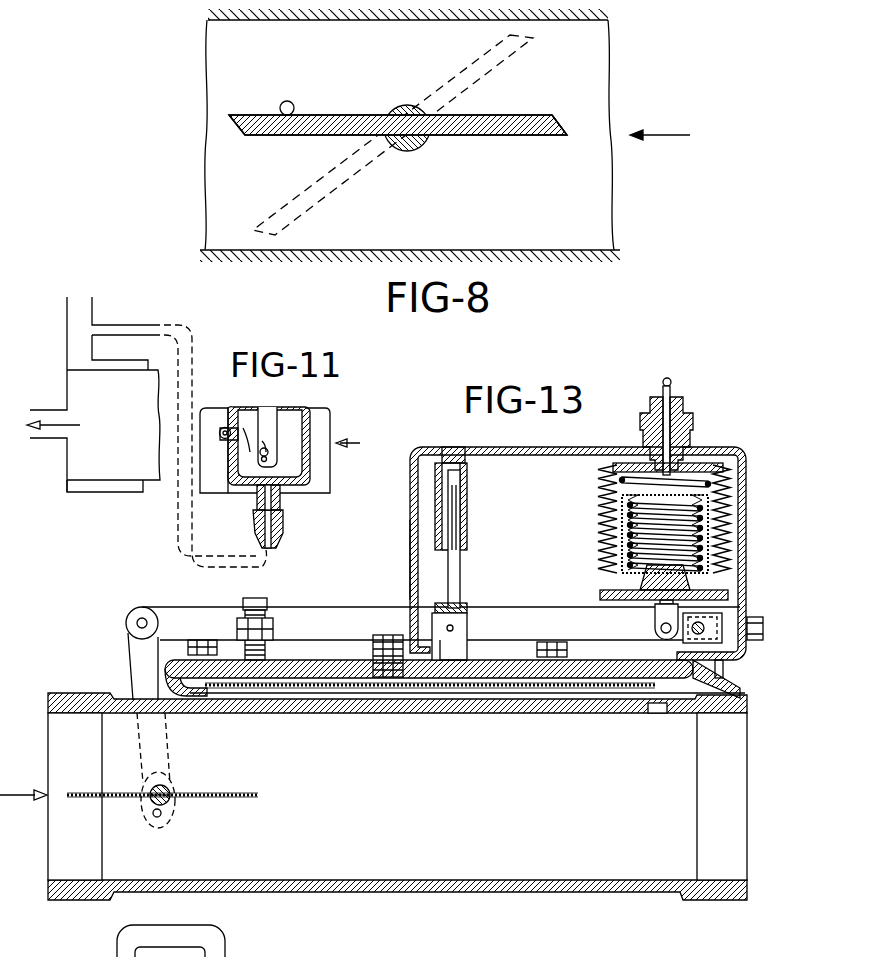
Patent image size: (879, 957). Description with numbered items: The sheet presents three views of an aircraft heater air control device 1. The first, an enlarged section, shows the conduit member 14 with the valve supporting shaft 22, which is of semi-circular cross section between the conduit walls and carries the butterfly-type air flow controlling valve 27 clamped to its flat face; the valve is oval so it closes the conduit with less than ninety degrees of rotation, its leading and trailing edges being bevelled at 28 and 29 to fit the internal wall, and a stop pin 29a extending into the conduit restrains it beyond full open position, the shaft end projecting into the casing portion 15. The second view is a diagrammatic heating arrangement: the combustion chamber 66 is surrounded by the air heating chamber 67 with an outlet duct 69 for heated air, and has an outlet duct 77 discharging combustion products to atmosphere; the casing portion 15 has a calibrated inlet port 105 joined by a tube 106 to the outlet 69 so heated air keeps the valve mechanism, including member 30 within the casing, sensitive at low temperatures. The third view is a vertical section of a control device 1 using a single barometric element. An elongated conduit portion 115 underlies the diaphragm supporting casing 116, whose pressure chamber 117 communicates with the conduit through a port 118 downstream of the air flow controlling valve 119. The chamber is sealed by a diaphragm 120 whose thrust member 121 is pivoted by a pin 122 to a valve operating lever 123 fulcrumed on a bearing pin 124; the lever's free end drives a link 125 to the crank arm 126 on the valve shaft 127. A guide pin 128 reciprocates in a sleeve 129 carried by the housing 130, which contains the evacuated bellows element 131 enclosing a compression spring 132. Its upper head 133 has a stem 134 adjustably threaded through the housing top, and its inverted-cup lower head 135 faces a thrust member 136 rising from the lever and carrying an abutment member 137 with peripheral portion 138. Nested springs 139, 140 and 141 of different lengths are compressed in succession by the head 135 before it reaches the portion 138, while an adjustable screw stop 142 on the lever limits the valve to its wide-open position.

In FIG. 13, the control device 1 is at (590, 447).
In FIG. 11, the conduit member 14 is at (320, 494).
In FIG. 11, the casing portion 15 is at (311, 436).
In FIG. 8, the valve supporting shaft 22 is at (428, 140).
In FIG. 8, the air flow controlling valve 27 is at (500, 136).
In FIG. 8, the bevelled leading end edge 28 is at (556, 118).
In FIG. 8, the bevelled trailing end edge 29 is at (240, 134).
In FIG. 8, the stop member or pin 29a is at (286, 101).
In FIG. 11, the valve member 30 is at (272, 424).
In FIG. 11, the combustion chamber 66 is at (120, 436).
In FIG. 11, the air heating chamber 67 is at (121, 486).
In FIG. 11, the outlet duct 69 is at (94, 304).
In FIG. 11, the outlet conduit or duct 77 is at (46, 440).
In FIG. 11, the calibrated inlet port 105 is at (257, 498).
In FIG. 11, the tube or conduit 106 is at (150, 322).
In FIG. 13, the conduit portion 115 is at (397, 807).
In FIG. 13, the diaphragm supporting casing 116 is at (730, 678).
In FIG. 13, the pressure chamber 117 is at (507, 696).
In FIG. 13, the port 118 is at (657, 714).
In FIG. 13, the air flow controlling valve 119 is at (218, 795).
In FIG. 13, the pressure sensitive member or diaphragm 120 is at (389, 694).
In FIG. 13, the thrust member 121 is at (462, 655).
In FIG. 13, the pin 122 is at (460, 627).
In FIG. 13, the valve operating lever 123 is at (373, 615).
In FIG. 13, the shaft or bearing pin 124 is at (730, 624).
In FIG. 13, the link or thrust member 125 is at (133, 667).
In FIG. 13, the crank arm 126 is at (176, 804).
In FIG. 13, the valve supporting shaft 127 is at (170, 789).
In FIG. 13, the guide pin 128 is at (457, 525).
In FIG. 13, the sleeve member 129 is at (468, 480).
In FIG. 13, the housing 130 is at (410, 542).
In FIG. 13, the barometric operating element 131 is at (733, 474).
In FIG. 13, the helical coil compression spring 132 is at (620, 481).
In FIG. 13, the upper head or end wall 133 is at (706, 465).
In FIG. 13, the stem or supporting post 134 is at (684, 405).
In FIG. 13, the lower end wall or head 135 is at (712, 525).
In FIG. 13, the thrust member 136 is at (655, 627).
In FIG. 13, the spring supporting and abutment member 137 is at (600, 599).
In FIG. 13, the peripheral portion 138 is at (610, 588).
In FIG. 13, the helical coil spring 139 is at (628, 506).
In FIG. 13, the helical coil spring 140 is at (628, 527).
In FIG. 13, the helical coil spring 141 is at (628, 548).
In FIG. 13, the adjustable screw stop 142 is at (262, 613).